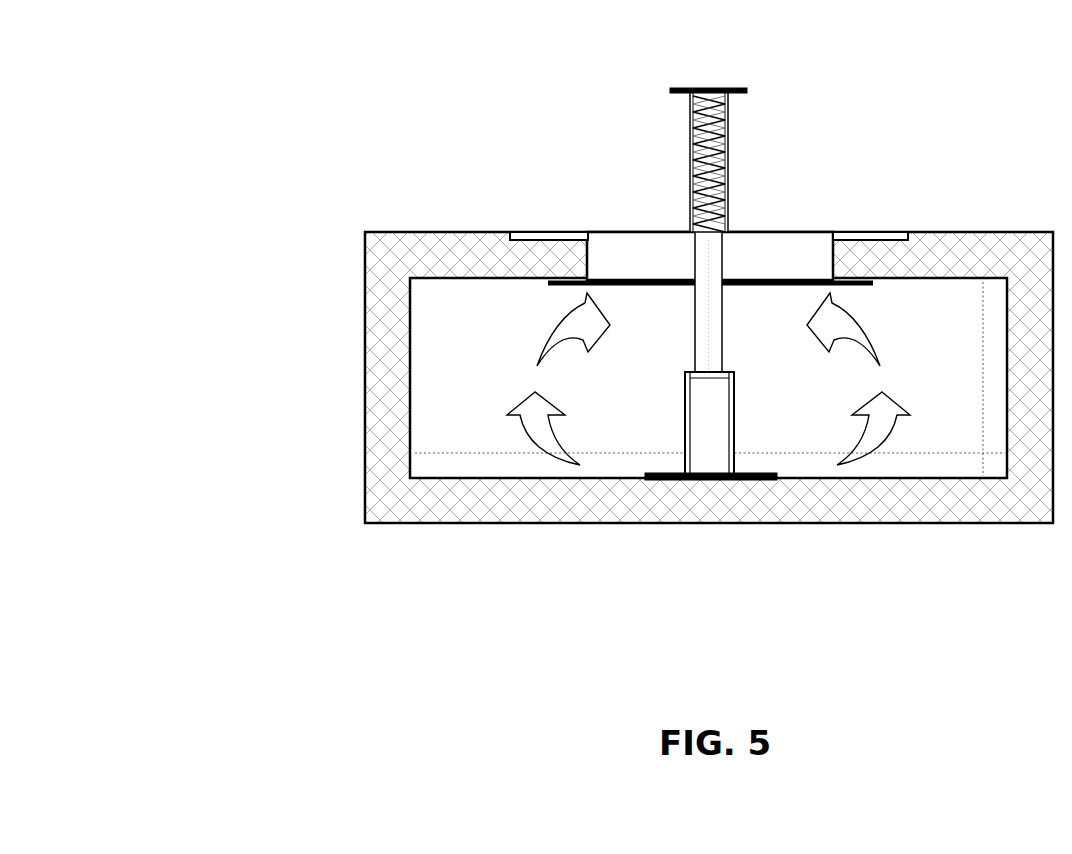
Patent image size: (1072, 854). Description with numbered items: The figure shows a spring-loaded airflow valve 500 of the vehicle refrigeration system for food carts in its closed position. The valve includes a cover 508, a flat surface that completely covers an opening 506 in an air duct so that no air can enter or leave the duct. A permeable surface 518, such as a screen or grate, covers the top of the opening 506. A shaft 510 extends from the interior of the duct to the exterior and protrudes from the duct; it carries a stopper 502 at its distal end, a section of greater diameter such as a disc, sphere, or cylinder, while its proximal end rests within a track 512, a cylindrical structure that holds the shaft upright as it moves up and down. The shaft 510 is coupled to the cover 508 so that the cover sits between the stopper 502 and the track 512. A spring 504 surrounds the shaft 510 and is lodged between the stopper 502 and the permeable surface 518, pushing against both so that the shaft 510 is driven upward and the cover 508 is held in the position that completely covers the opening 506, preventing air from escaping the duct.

The airflow valve 500 is at (601, 269).
The stopper 502 is at (749, 89).
The spring 504 is at (729, 168).
The opening 506 is at (843, 241).
The cover 508 is at (550, 288).
The shaft 510 is at (710, 336).
The track 512 is at (723, 426).
The permeable surface 518 is at (605, 226).